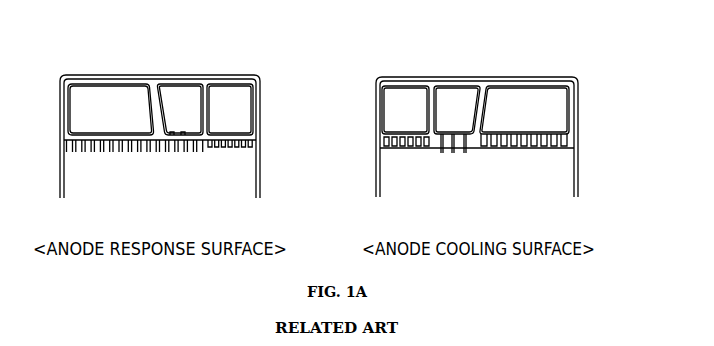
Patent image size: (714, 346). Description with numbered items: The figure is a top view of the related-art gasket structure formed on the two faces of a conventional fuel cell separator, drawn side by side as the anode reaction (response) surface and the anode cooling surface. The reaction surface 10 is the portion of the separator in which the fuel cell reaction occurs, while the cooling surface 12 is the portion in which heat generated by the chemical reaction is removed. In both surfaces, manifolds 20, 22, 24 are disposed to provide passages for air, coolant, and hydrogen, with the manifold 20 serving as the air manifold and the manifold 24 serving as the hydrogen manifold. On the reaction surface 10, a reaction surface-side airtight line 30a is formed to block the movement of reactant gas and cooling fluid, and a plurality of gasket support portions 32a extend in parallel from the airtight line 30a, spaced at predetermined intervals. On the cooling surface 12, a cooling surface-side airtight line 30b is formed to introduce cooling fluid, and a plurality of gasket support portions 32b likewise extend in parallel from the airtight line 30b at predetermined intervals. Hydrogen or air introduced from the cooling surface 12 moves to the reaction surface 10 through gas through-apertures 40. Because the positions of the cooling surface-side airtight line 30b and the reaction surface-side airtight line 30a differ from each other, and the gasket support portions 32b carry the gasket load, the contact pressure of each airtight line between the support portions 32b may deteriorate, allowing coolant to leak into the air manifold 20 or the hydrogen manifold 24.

The reaction surface 10 is at (213, 177).
The cooling surface 12 is at (532, 178).
The air manifold 20 is at (232, 92).
The manifold 22 is at (175, 92).
The hydrogen manifold 24 is at (105, 92).
The reaction surface-side airtight line 30a is at (245, 135).
The cooling surface-side airtight line 30b is at (478, 148).
The gasket support portion 32a is at (102, 150).
The gasket support portion 32b is at (387, 138).
The gas through-aperture 40 is at (382, 143).